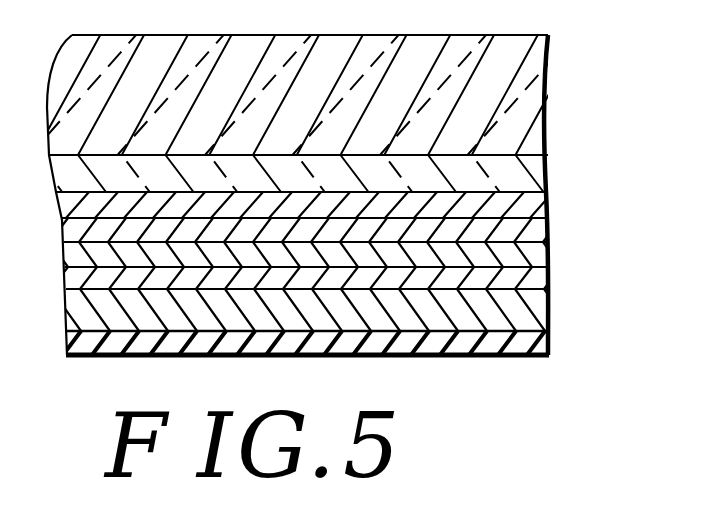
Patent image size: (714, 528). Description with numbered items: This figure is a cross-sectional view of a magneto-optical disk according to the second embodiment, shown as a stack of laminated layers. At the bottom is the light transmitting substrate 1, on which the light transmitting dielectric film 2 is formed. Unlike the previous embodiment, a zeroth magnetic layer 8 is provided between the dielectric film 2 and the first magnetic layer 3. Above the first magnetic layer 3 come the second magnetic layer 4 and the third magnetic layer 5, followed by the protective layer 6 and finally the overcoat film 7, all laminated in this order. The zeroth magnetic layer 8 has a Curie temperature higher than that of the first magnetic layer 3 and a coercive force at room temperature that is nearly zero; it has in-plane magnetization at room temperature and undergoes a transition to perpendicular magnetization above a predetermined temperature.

The light transmitting substrate 1 is at (549, 45).
The light transmitting dielectric film 2 is at (549, 157).
The magnetic layer (zeroth magnetic layer) 8 is at (549, 197).
The magnetic layer (first magnetic layer) 3 is at (549, 226).
The magnetic layer (second magnetic layer) 4 is at (533, 253).
The magnetic layer (third magnetic layer) 5 is at (549, 278).
The protective layer 6 is at (527, 308).
The overcoat film 7 is at (547, 343).